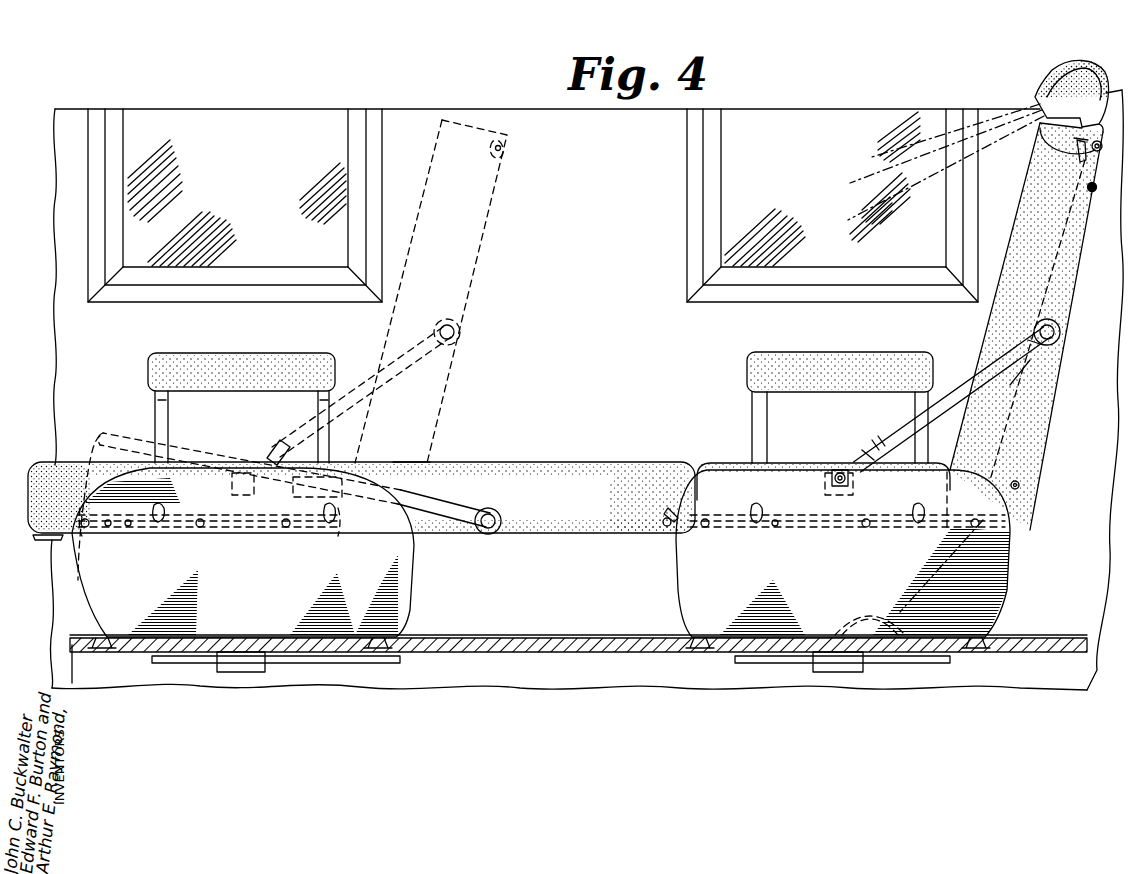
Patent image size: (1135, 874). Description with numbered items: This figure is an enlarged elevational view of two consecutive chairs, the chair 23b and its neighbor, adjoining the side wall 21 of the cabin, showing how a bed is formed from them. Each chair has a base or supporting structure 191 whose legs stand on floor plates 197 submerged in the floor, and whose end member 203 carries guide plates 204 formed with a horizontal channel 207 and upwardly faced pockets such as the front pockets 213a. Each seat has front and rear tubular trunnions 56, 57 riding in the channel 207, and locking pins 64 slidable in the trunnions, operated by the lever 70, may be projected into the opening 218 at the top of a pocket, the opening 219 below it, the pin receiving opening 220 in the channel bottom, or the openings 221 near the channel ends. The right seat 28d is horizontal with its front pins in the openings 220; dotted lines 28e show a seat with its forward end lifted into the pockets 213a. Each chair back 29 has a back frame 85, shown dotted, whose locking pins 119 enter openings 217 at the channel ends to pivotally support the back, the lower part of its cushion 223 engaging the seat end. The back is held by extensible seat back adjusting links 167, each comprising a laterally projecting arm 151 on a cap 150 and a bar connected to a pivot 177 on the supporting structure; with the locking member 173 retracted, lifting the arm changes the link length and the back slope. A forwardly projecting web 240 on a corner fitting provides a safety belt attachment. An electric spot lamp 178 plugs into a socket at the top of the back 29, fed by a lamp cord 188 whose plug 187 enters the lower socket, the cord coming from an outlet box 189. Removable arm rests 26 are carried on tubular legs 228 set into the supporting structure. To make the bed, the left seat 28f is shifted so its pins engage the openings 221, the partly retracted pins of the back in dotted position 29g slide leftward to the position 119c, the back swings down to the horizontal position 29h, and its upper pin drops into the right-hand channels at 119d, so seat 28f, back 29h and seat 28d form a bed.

The side wall 21 is at (650, 155).
The electric spot lamp 178 is at (1040, 72).
The chair back 29 is at (1015, 213).
The back frame 85 is at (1058, 283).
The forwardly projecting web 240 is at (1078, 150).
The seat back in full line horizontal position 29h is at (548, 465).
The seat 28f is at (40, 462).
The lever 70 is at (48, 540).
The seat 28d is at (720, 462).
The base or supporting structure 191 is at (398, 620).
The locking pins 119 is at (78, 505).
The locking pins in slid position 119c is at (286, 540).
The upper locking pin in dropped position 119d is at (508, 149).
The seat back in dotted line position 29g is at (480, 242).
The arm rest 26 is at (228, 353).
The tubular legs 228 is at (170, 418).
The chair 23b is at (393, 462).
The seat in raised dotted line position 28e is at (118, 430).
The seat back adjusting link 167 is at (357, 378).
The cap 150 is at (1053, 346).
The laterally projecting arm 151 is at (1012, 390).
The cushion 223 is at (978, 438).
The openings 217 is at (1012, 505).
The plug 187 is at (1012, 550).
The lamp cord 188 is at (1000, 588).
The locking member 173 is at (868, 456).
The pivot 177 is at (838, 474).
The front pockets 213a is at (170, 532).
The opening 218 is at (160, 507).
The tubular trunnions 56 is at (92, 522).
The locking pin 64 is at (108, 530).
The horizontal channel 207 is at (125, 540).
The pin receiving opening 220 is at (142, 545).
The opening 219 is at (162, 540).
The pin receiving openings 221 is at (112, 540).
The tubular trunnions 57 is at (222, 540).
The guide plates 204 is at (352, 540).
The end member 203 is at (212, 622).
The floor plates 197 is at (108, 652).
The outlet box 189 is at (248, 665).